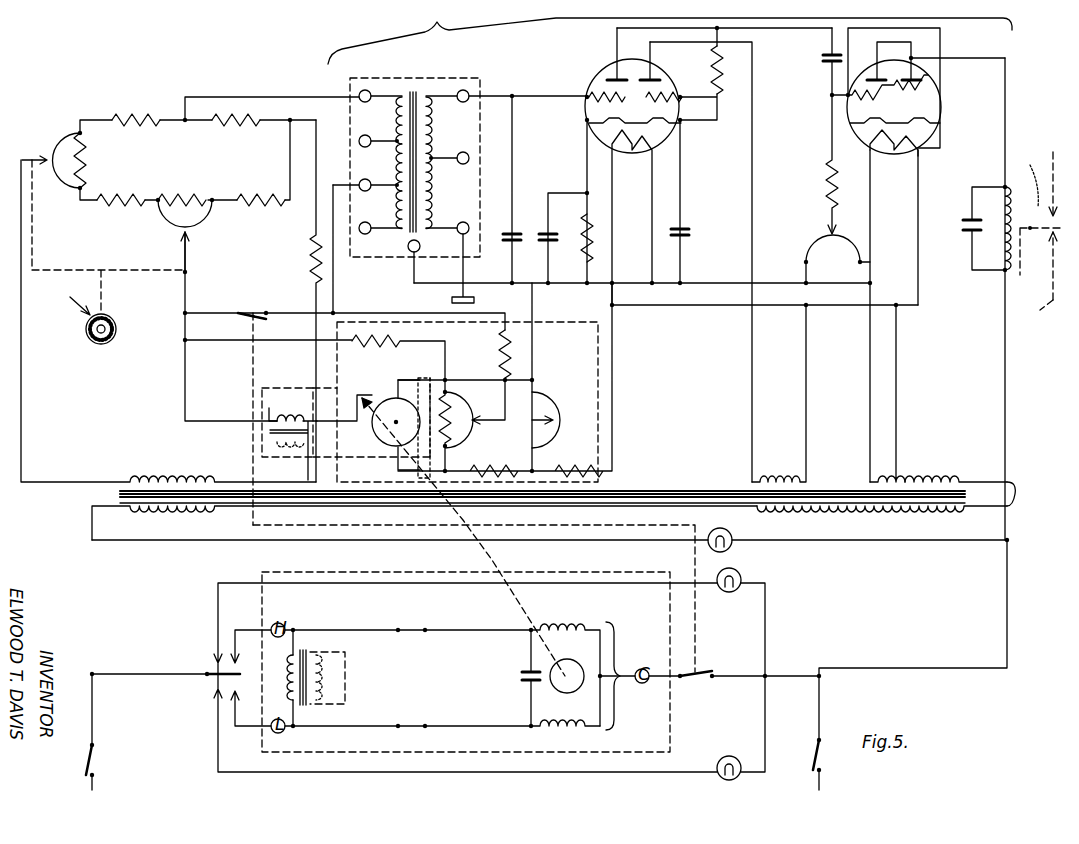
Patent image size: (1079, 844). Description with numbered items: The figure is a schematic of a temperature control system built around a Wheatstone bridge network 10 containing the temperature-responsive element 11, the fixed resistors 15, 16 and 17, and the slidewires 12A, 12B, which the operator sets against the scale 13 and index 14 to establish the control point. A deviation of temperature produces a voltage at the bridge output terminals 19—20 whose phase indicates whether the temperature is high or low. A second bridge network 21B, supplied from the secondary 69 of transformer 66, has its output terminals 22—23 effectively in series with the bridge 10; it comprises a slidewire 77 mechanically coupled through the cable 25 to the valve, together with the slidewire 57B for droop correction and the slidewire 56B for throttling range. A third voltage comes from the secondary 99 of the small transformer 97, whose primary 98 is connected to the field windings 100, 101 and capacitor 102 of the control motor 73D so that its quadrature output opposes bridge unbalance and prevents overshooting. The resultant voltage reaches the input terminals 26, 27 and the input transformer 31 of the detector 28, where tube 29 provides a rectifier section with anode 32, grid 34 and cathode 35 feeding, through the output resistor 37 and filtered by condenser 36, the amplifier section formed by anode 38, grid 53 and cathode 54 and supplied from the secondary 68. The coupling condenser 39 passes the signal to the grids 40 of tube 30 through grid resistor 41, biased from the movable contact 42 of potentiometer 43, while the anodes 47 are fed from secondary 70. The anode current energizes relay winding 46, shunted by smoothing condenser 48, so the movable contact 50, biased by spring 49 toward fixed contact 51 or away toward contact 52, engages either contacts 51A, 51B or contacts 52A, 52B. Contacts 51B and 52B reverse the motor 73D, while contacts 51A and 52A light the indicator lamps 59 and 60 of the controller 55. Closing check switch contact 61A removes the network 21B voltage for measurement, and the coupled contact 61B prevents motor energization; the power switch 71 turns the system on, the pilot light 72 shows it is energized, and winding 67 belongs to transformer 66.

The network 10 is at (195, 171).
The element 11 is at (240, 130).
The slidewire 12A is at (66, 142).
The slidewire 12B is at (206, 222).
The scale 13 is at (112, 335).
The index 14 is at (70, 311).
The fixed resistor 15 is at (137, 136).
The fixed resistor 16 is at (117, 193).
The fixed resistor 17 is at (262, 184).
The output terminal 19 is at (184, 109).
The output terminal 20 is at (187, 260).
The network 21B is at (576, 345).
The output terminal 22 is at (219, 421).
The output terminal 23 is at (336, 312).
The cable 25 is at (412, 380).
The input terminal 26 is at (374, 88).
The input terminal 27 is at (366, 136).
The detector 28 is at (428, 33).
The tube 29 is at (592, 78).
The tube 30 is at (942, 104).
The input transformer 31 is at (458, 125).
The anode 32 is at (656, 66).
The grid 34 is at (714, 72).
The cathode 35 is at (670, 136).
The filter condenser 36 is at (692, 234).
The output resistor 37 is at (717, 94).
The anode 38 is at (612, 58).
The coupling condenser 39 is at (826, 54).
The grids 40 is at (894, 115).
The grid resistor 41 is at (814, 178).
The movable contact 42 is at (830, 222).
The potentiometer 43 is at (814, 246).
The winding 46 is at (1006, 270).
The anodes 47 is at (894, 61).
The smoothing condenser 48 is at (968, 234).
The spring 49 is at (1008, 190).
The movable contact 50 is at (633, 452).
The fixed contact 51 is at (1046, 179).
The contact 51A is at (214, 640).
The contact 51B is at (240, 622).
The fixed contact 52 is at (1045, 302).
The contact 52A is at (214, 692).
The contact 52B is at (214, 720).
The grid 53 is at (586, 108).
The cathode 54 is at (592, 133).
The controller 55 is at (298, 384).
The slidewire 56B is at (559, 412).
The slidewire 57B is at (472, 434).
The indicator lamp 59 is at (740, 576).
The indicator lamp 60 is at (736, 778).
The contact 61A is at (250, 312).
The contact 61B is at (698, 682).
The transformer 66 is at (1048, 503).
The winding 67 is at (130, 478).
The secondary 68 is at (750, 470).
The secondary 69 is at (876, 470).
The secondary 70 is at (926, 478).
The power switch 71 is at (98, 754).
The pilot light 72 is at (732, 536).
The control motor 73D is at (633, 676).
The slidewire 77 is at (376, 430).
The transformer 97 is at (264, 436).
The primary 98 is at (290, 460).
The secondary 99 is at (290, 420).
The field winding 100 is at (544, 626).
The field winding 101 is at (572, 734).
The capacitor 102 is at (524, 670).